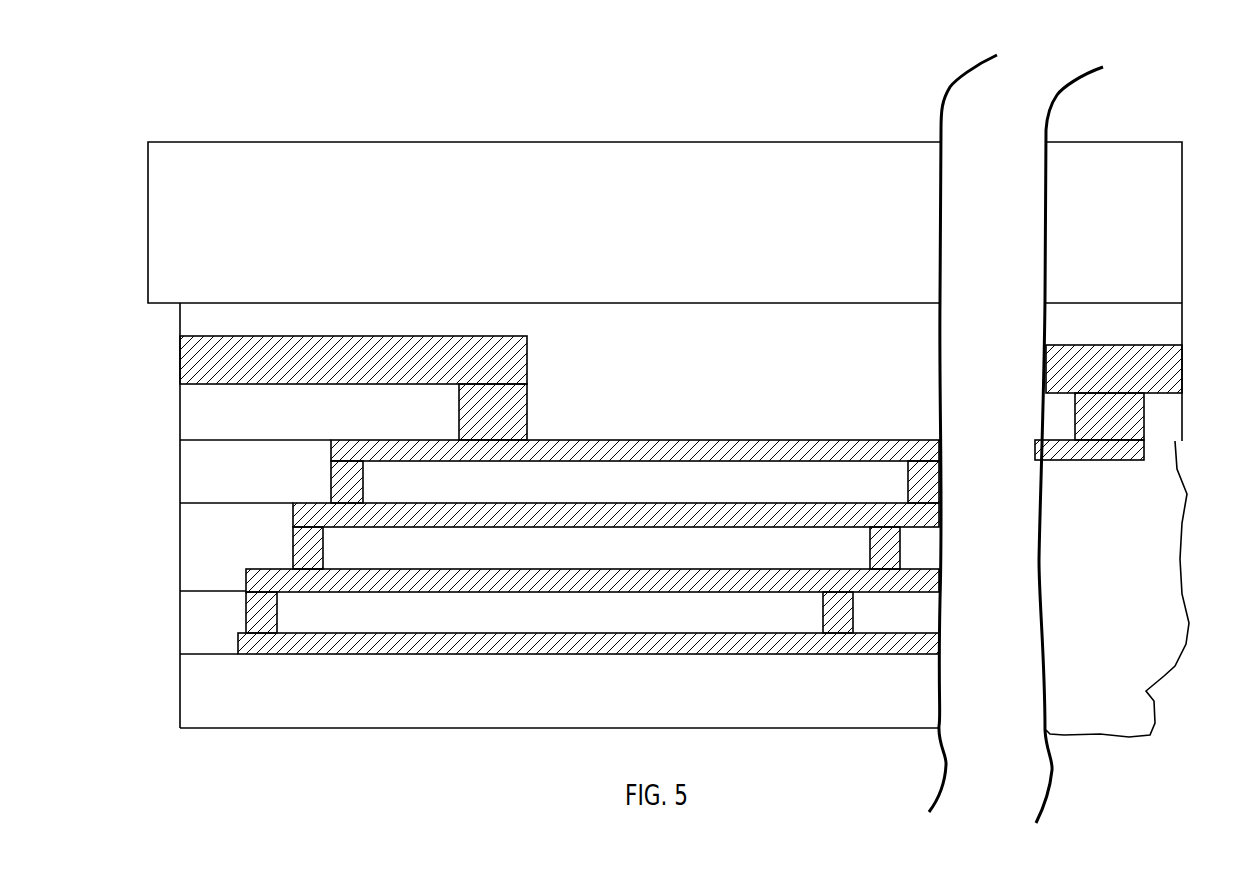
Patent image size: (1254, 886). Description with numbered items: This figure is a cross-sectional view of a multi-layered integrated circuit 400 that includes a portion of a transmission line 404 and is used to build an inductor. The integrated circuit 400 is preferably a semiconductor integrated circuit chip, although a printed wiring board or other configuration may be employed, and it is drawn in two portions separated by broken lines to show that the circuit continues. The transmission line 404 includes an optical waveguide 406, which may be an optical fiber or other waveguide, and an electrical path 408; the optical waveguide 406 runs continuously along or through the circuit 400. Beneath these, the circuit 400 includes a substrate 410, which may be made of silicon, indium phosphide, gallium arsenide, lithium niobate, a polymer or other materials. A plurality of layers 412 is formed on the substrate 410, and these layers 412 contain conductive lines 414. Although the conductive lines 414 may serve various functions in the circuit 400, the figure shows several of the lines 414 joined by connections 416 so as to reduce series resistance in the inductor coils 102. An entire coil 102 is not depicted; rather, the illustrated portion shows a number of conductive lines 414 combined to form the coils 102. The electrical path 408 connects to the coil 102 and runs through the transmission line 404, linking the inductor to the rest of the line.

The integrated circuit 400 is at (659, 48).
The inductor coil 102 is at (800, 400).
The transmission line 404 is at (875, 121).
The optical waveguide 406 is at (590, 168).
The electrical path 408 is at (527, 350).
The substrate 410 is at (496, 701).
The layers 412 is at (192, 415).
The conductive lines 414 is at (587, 462).
The connections 416 is at (330, 476).